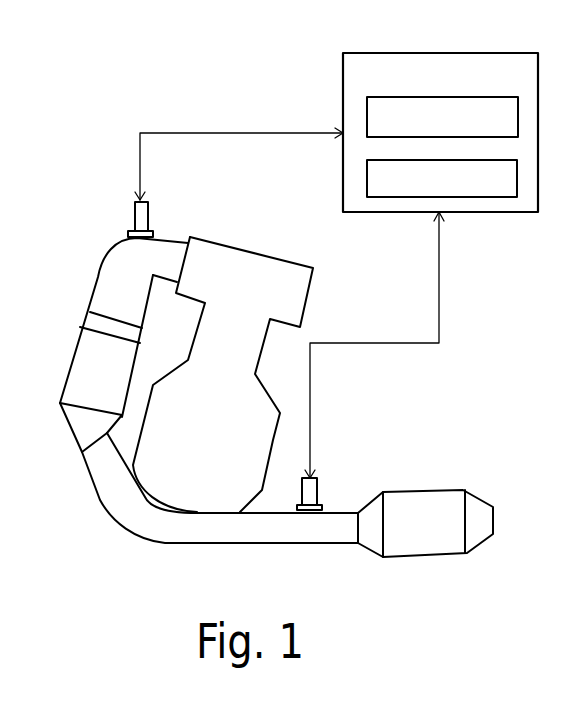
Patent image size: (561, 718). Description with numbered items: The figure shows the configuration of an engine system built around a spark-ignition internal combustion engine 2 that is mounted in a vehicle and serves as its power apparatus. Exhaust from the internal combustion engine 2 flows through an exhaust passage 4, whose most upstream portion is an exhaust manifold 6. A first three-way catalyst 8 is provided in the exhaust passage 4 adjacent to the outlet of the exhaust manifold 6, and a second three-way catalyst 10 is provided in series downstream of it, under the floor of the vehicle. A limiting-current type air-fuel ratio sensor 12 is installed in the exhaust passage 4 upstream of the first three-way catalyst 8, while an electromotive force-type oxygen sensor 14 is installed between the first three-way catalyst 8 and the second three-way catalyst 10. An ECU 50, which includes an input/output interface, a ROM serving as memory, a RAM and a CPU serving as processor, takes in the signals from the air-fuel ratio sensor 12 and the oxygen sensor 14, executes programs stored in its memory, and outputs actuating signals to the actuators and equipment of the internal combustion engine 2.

The internal combustion engine 2 is at (262, 253).
The exhaust passage 4 is at (93, 490).
The exhaust manifold 6 is at (96, 276).
The first three-way catalyst 8 is at (76, 350).
The second three-way catalyst 10 is at (420, 491).
The air-fuel ratio sensor 12 is at (134, 216).
The oxygen sensor 14 is at (318, 492).
The ECU 50 is at (442, 53).